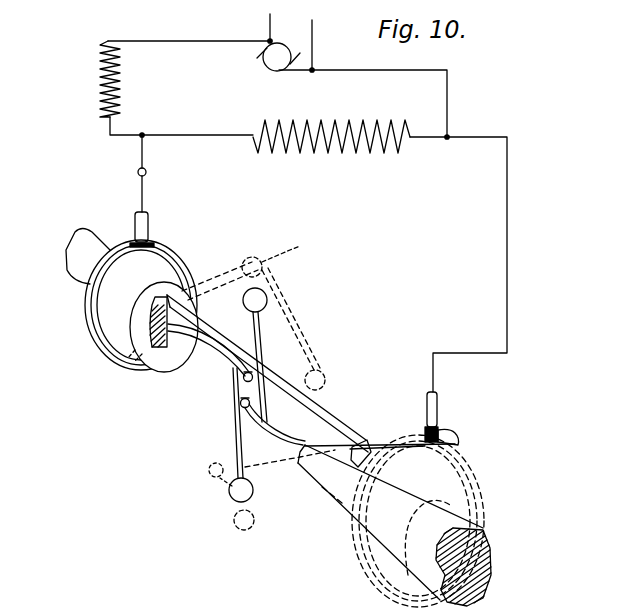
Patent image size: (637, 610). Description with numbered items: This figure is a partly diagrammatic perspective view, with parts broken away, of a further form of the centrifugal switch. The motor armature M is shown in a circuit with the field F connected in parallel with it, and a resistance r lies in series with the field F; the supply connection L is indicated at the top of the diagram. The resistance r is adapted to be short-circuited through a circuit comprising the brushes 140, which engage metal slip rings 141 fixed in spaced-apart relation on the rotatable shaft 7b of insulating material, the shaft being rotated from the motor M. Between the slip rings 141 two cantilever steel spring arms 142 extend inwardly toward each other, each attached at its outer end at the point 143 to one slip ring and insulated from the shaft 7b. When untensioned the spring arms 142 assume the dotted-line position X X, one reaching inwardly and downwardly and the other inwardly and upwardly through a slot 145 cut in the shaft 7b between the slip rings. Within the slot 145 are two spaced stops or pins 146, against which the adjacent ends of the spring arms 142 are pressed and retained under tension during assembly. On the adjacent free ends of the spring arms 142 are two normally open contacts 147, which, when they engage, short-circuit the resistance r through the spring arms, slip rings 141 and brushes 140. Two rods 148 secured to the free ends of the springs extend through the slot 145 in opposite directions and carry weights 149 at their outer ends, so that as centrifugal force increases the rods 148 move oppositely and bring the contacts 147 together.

The rotatable shaft 7b is at (82, 262).
The brushes 140 is at (148, 226).
The slip rings 141 is at (160, 250).
The spring arms 142 is at (203, 336).
The attachment point 143 is at (136, 362).
The slot 145 is at (302, 418).
The stops or pins 146 is at (260, 356).
The contacts 147 is at (245, 380).
The rods 148 is at (263, 330).
The weights 149 is at (265, 298).
The field F is at (97, 79).
The line L is at (272, 38).
The motor armature M is at (269, 71).
The resistance r is at (331, 148).
The untensioned position X is at (251, 372).